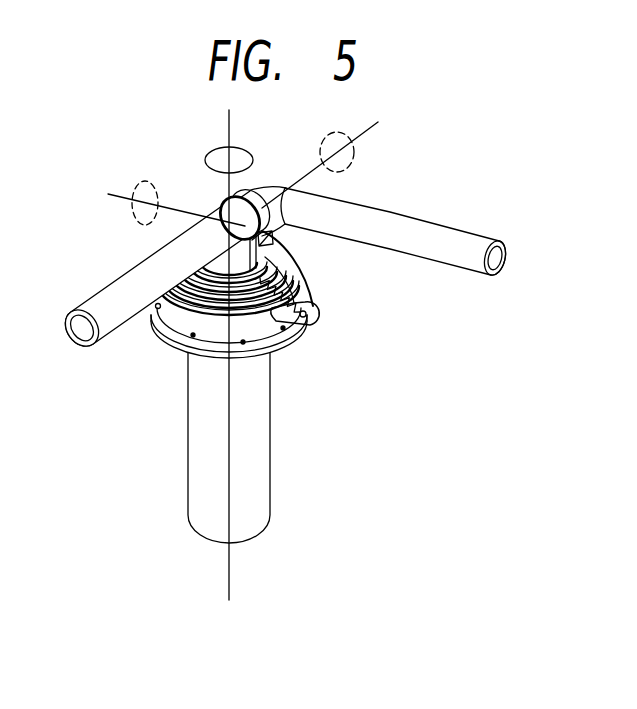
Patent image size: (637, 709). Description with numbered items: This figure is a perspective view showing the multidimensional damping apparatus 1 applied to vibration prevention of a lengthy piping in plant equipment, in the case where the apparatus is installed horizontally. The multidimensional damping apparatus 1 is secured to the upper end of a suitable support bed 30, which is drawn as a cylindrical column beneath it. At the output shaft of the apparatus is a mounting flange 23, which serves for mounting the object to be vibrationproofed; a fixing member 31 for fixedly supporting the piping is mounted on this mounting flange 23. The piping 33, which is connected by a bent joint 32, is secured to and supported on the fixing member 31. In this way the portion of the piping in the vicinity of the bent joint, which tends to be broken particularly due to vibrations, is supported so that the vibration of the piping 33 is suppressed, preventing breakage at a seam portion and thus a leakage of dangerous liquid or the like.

The multidimensional damping apparatus 1 is at (298, 346).
The mounting flange 23 is at (215, 266).
The support bed 30 is at (258, 443).
The fixing member 31 is at (300, 276).
The bent joint 32 is at (240, 192).
The piping 33 is at (405, 212).